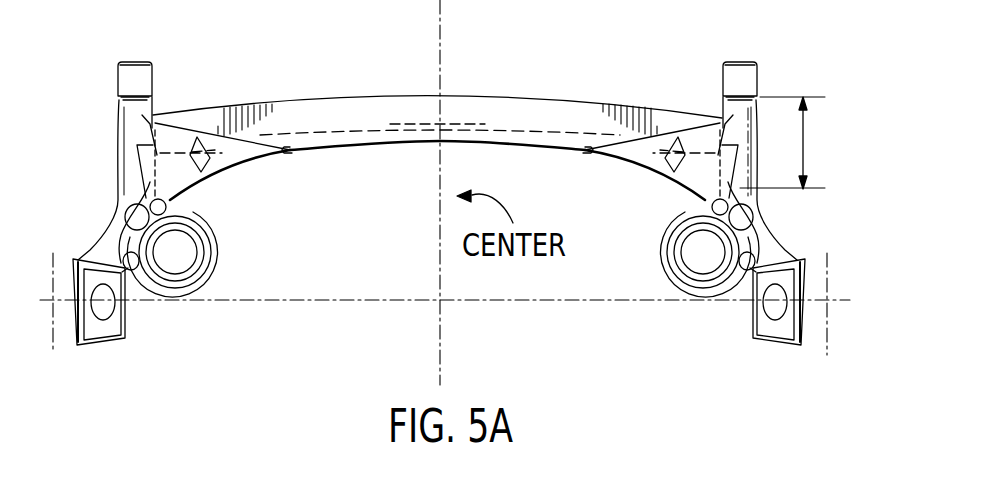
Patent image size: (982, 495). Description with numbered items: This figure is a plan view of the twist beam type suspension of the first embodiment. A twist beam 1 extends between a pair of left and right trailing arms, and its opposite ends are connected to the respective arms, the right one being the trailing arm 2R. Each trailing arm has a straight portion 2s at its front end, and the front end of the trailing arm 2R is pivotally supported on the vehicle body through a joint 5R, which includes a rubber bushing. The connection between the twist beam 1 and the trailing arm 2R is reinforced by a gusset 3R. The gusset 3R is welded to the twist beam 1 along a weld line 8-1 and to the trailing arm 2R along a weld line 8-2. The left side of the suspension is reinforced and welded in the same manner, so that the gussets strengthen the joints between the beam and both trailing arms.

The twist beam 1 is at (513, 97).
The weld line 8-1 is at (663, 127).
The joint 5R is at (757, 78).
The straight portion 2s is at (790, 143).
The gusset 3R is at (645, 166).
The weld line 8-2 is at (760, 168).
The trailing arm 2R is at (787, 230).